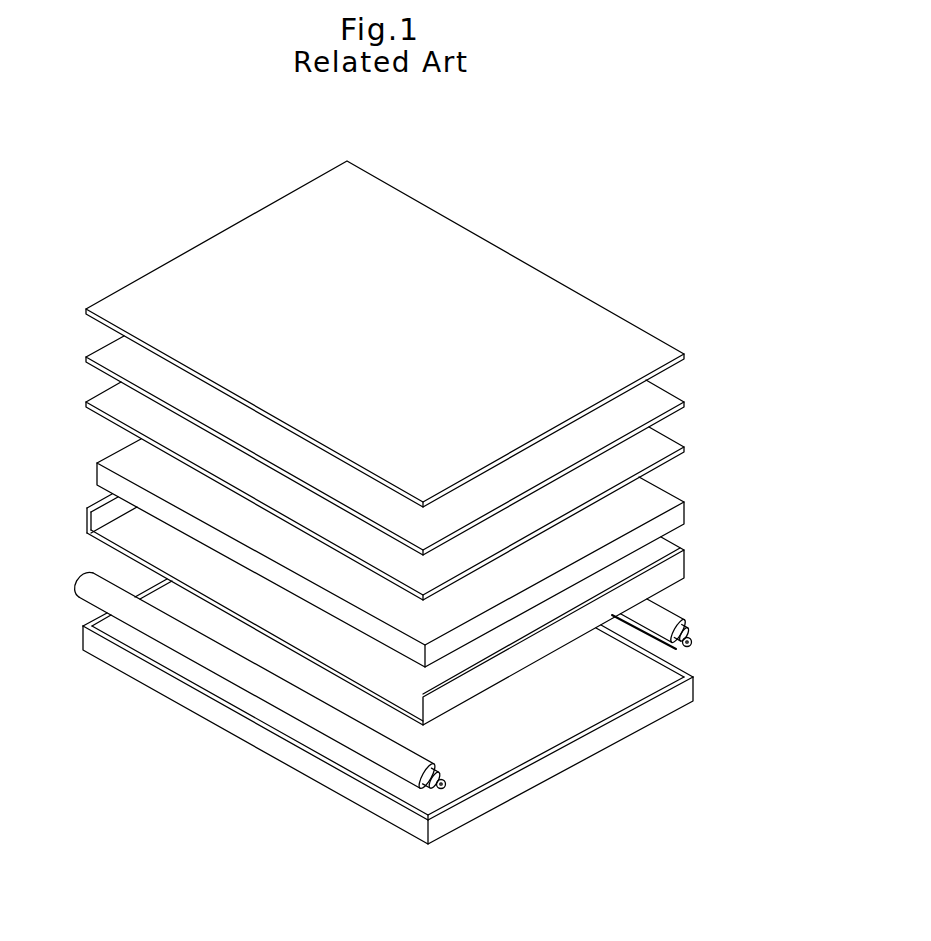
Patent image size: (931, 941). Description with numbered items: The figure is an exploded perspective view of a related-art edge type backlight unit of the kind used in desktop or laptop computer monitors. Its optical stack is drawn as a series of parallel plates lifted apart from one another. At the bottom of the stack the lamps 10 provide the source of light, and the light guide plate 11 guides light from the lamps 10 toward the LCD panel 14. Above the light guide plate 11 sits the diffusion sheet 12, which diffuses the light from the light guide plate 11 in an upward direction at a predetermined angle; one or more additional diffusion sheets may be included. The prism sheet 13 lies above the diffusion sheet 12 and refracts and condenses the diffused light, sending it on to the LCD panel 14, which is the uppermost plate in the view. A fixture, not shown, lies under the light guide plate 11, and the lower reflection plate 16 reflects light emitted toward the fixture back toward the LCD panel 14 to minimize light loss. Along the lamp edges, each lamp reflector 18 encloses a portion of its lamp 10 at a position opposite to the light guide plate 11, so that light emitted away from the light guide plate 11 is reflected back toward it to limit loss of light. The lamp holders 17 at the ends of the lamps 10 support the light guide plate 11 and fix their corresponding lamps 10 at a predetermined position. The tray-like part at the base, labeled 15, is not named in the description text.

The lamp 10 is at (442, 783).
The light guide plate 11 is at (668, 500).
The diffusion sheet 12 is at (667, 445).
The prism sheet 13 is at (668, 397).
The LCD panel 14 is at (645, 340).
The bottom cover (lower case) 15 is at (668, 700).
The lower reflection plate 16 is at (680, 567).
The lamp holder 17 is at (425, 788).
The lamp reflector 18 is at (383, 751).